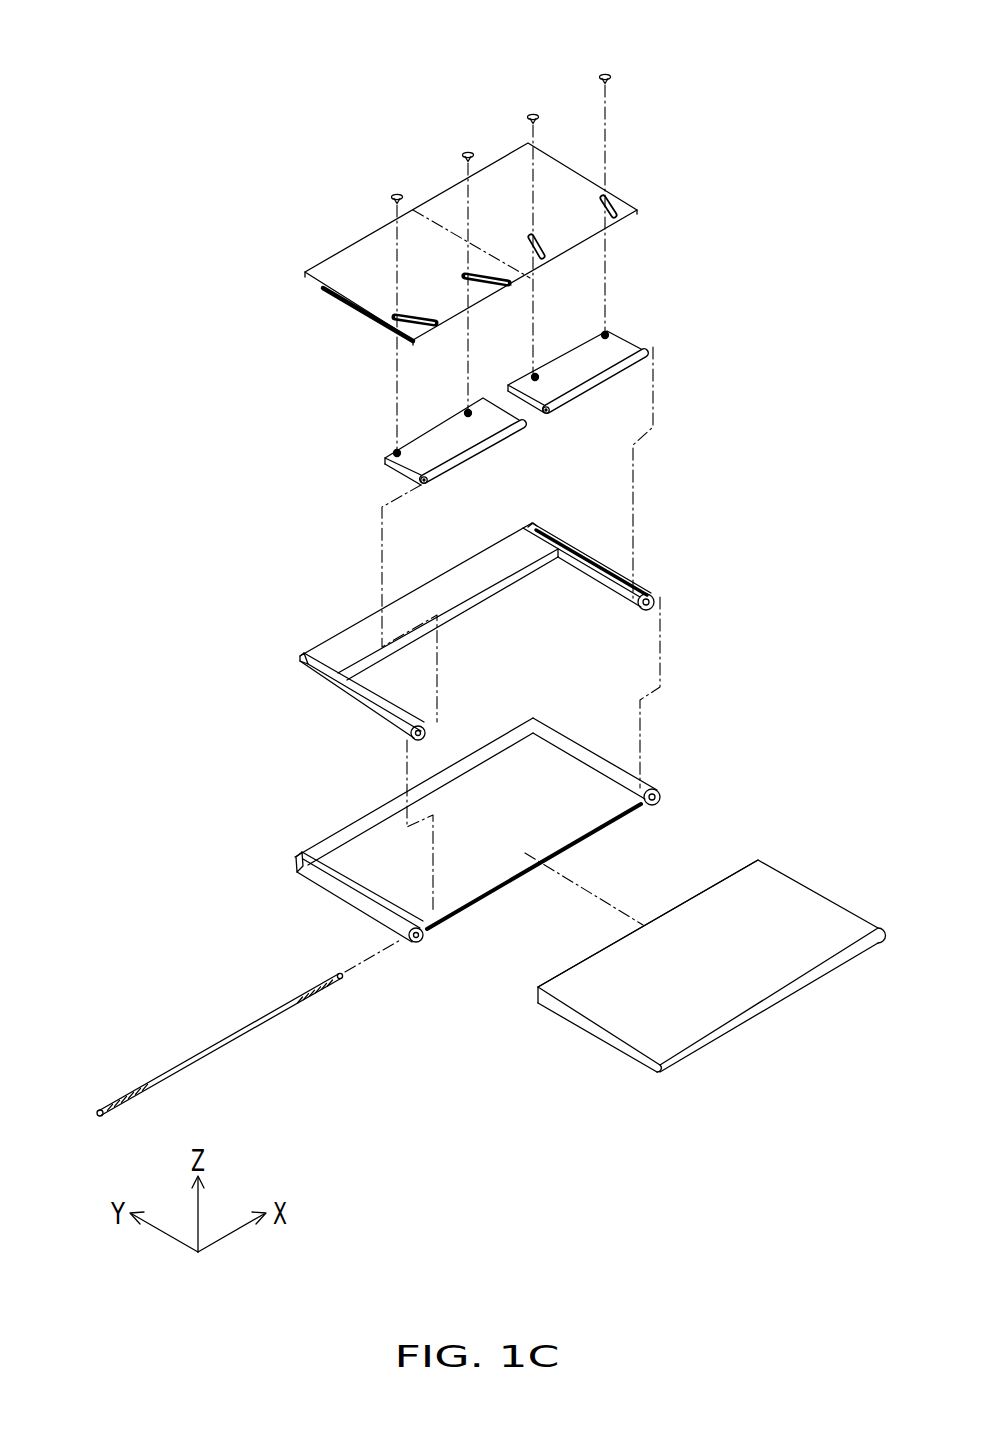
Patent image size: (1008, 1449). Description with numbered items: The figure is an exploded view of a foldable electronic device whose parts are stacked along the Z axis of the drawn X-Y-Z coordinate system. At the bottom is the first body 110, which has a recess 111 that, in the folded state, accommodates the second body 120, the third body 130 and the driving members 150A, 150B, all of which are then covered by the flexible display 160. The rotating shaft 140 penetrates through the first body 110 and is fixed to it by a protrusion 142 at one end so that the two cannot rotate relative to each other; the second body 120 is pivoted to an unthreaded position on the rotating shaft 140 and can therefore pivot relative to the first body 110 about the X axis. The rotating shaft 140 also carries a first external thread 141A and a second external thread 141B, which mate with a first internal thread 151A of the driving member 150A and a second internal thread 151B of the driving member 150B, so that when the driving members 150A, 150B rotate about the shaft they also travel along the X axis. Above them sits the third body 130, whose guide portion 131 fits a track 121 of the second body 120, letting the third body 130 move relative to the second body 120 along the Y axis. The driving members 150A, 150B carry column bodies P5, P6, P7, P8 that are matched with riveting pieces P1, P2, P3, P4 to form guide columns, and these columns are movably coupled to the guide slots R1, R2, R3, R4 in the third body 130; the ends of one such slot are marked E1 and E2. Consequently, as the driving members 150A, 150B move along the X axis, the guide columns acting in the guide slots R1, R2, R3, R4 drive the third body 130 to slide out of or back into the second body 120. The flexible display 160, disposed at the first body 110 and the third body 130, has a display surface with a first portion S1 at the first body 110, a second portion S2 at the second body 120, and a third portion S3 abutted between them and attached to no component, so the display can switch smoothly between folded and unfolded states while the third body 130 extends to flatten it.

The first body 110 is at (436, 830).
The recess 111 is at (360, 851).
The second body 120 is at (449, 633).
The track 121 is at (592, 564).
The third body 130 is at (338, 252).
The guide portion 131 is at (646, 213).
The rotating shaft 140 is at (193, 1047).
The first external thread 141A is at (310, 987).
The second external thread 141B is at (120, 1092).
The protrusion 142 is at (98, 1118).
The driving member 150A is at (606, 367).
The driving member 150B is at (402, 445).
The first internal thread 151A is at (543, 416).
The second internal thread 151B is at (416, 488).
The flexible display 160 is at (712, 981).
The riveting piece P1 is at (606, 70).
The riveting piece P2 is at (535, 110).
The riveting piece P3 is at (469, 148).
The riveting piece P4 is at (398, 190).
The column body P5 is at (601, 332).
The column body P6 is at (530, 375).
The column body P7 is at (462, 412).
The column body P8 is at (392, 450).
The guide slot R1 is at (614, 206).
The guide slot R2 is at (539, 243).
The guide slot R3 is at (485, 273).
The guide slot R4 is at (415, 314).
The first end of slot E1 is at (461, 274).
The second end of slot E2 is at (511, 286).
The first portion S1 is at (597, 1038).
The second portion S2 is at (600, 975).
The third portion S3 is at (779, 993).